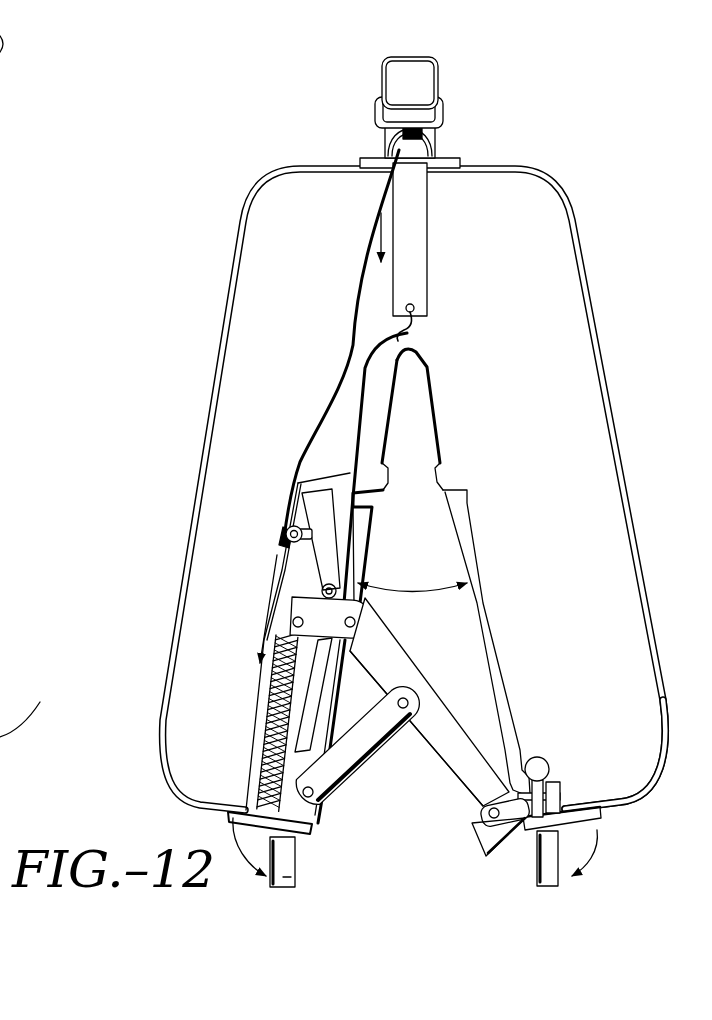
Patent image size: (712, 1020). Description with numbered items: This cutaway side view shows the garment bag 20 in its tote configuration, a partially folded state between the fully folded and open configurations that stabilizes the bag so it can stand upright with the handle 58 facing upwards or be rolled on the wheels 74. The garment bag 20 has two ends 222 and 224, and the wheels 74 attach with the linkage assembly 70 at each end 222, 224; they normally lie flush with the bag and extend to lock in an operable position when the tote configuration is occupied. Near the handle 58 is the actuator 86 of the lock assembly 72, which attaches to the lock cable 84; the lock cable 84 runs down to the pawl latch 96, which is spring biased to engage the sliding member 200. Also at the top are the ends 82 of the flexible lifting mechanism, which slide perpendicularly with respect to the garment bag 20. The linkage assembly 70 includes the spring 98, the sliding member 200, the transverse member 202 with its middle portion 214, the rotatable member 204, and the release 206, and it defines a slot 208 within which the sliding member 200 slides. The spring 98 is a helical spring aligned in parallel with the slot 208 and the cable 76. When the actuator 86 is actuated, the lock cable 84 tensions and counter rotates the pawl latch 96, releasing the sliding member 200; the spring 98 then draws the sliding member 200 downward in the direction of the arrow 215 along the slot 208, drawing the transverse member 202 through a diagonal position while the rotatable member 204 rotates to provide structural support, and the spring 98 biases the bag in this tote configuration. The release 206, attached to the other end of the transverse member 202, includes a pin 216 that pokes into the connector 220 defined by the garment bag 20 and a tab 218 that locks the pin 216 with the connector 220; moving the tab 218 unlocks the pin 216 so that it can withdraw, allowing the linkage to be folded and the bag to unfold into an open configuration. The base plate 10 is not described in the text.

The base plate 10 is at (232, 829).
The garment bag 20 is at (592, 65).
The handle 58 is at (438, 86).
The linkage assembly 70 is at (379, 620).
The lock assembly 72 is at (280, 535).
The wheels 74 is at (300, 886).
The cable 76 is at (402, 339).
The ends of the lifting mechanism 82 is at (431, 296).
The lock cable 84 is at (355, 349).
The actuator 86 is at (388, 141).
The pawl latch 96 is at (289, 528).
The spring 98 is at (262, 752).
The sliding member 200 is at (292, 602).
The transverse member 202 is at (398, 650).
The rotatable member 204 is at (348, 797).
The release 206 is at (491, 808).
The slot 208 is at (323, 684).
The middle portion 214 is at (427, 694).
The arrow 215 is at (264, 628).
The pin 216 is at (487, 845).
The tab 218 is at (538, 758).
The connector 220 is at (568, 790).
The end 222 is at (234, 825).
The end 224 is at (618, 808).